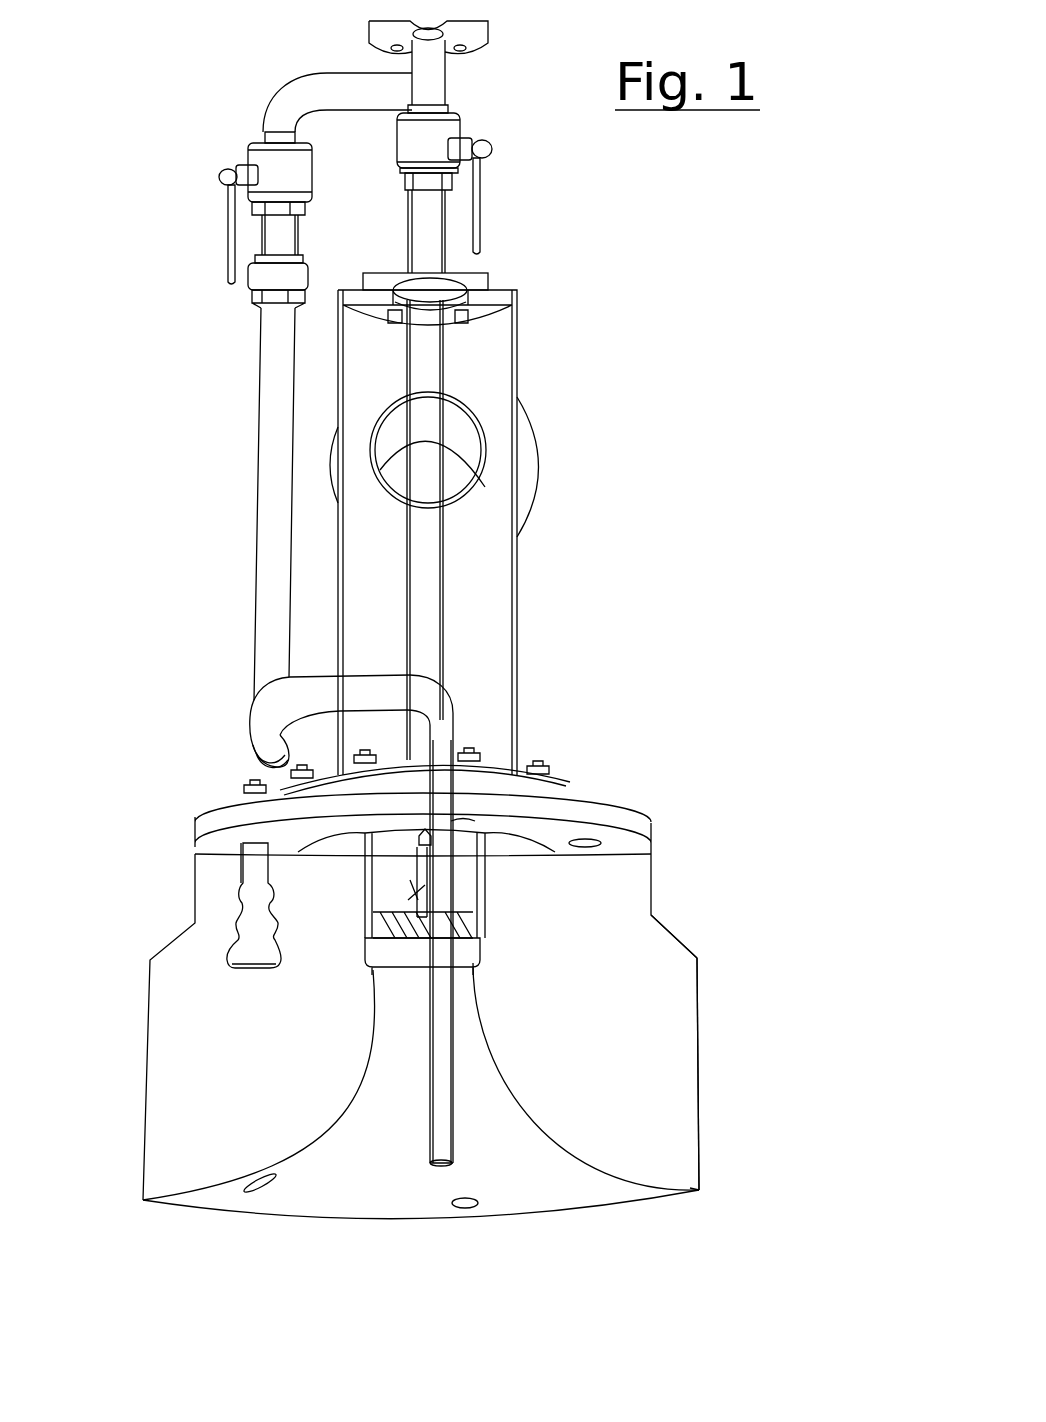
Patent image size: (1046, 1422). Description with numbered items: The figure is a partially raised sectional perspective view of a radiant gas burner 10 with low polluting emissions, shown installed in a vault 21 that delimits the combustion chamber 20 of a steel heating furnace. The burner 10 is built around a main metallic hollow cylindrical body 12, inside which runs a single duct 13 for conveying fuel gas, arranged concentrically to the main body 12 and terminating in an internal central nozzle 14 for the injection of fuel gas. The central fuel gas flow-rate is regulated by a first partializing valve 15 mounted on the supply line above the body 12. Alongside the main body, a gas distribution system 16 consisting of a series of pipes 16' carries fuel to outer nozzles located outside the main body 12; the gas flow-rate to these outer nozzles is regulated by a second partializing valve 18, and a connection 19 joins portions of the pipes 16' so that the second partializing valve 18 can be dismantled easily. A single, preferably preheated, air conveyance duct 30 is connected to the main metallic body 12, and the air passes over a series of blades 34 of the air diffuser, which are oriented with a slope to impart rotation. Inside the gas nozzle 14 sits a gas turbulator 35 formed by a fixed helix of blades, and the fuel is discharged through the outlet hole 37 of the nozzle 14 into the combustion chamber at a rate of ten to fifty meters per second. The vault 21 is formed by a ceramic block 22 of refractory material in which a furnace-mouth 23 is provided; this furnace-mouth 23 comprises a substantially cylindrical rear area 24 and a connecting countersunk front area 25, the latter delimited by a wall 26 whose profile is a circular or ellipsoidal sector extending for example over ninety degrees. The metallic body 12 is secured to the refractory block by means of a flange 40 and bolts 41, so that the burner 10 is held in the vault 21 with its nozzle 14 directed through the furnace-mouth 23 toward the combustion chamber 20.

The radiant gas burner 10 is at (672, 233).
The main metallic hollow cylindrical body 12 is at (510, 675).
The single duct for conveying fuel gas 13 is at (420, 603).
The internal central nozzle 14 is at (413, 868).
The first partializing valve 15 is at (448, 128).
The gas distribution system 16 is at (205, 504).
The pipes 16' is at (317, 851).
The second partializing valve 18 is at (222, 250).
The connection 19 is at (250, 298).
The combustion chamber 20 is at (380, 1193).
The vault 21 is at (703, 1088).
The ceramic block 22 is at (670, 1125).
The furnace-mouth 23 is at (395, 1067).
The cylindrical rear area 24 is at (615, 892).
The countersunk front area 25 is at (665, 1180).
The wall 26 is at (557, 1153).
The air conveyance duct 30 is at (468, 473).
The blades 34 is at (377, 930).
The gas turbulator 35 is at (423, 847).
The outlet hole 37 is at (423, 957).
The flange 40 is at (552, 780).
The bolts 41 is at (540, 780).